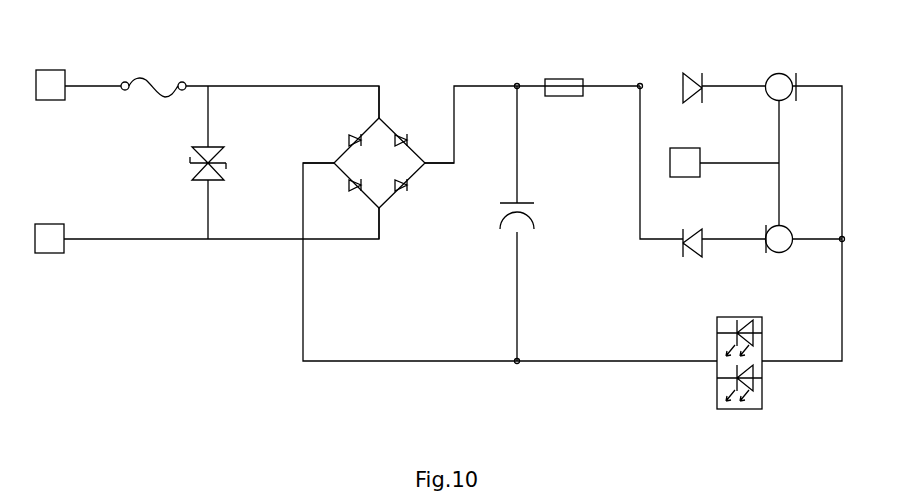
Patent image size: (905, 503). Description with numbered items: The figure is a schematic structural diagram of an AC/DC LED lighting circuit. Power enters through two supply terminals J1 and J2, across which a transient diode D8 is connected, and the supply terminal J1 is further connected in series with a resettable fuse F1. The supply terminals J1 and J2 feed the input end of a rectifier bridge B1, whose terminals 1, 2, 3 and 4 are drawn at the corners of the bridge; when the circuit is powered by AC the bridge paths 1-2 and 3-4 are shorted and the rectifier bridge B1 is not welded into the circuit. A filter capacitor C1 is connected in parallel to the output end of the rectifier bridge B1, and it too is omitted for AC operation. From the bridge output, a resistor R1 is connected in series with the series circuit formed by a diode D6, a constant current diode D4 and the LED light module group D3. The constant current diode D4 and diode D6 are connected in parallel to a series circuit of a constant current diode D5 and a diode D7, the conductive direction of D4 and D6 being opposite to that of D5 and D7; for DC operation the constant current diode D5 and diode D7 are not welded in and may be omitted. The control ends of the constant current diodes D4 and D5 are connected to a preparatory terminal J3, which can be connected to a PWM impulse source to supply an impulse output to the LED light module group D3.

The supply terminal J1 is at (77, 73).
The supply terminal J2 is at (49, 228).
The resettable fuse F1 is at (153, 72).
The transient diode D8 is at (221, 155).
The rectifier bridge B1 is at (375, 158).
The rectifier bridge terminal 1 is at (387, 100).
The rectifier bridge terminal 2 is at (439, 151).
The rectifier bridge terminal 3 is at (370, 223).
The rectifier bridge terminal 4 is at (318, 174).
The resistor R1 is at (564, 78).
The filter capacitor C1 is at (526, 199).
The diode D6 is at (690, 76).
The constant current diode D4 is at (781, 75).
The preparatory terminal J3 is at (682, 152).
The diode D7 is at (690, 228).
The constant current diode D5 is at (767, 225).
The LED light module group D3 is at (739, 349).